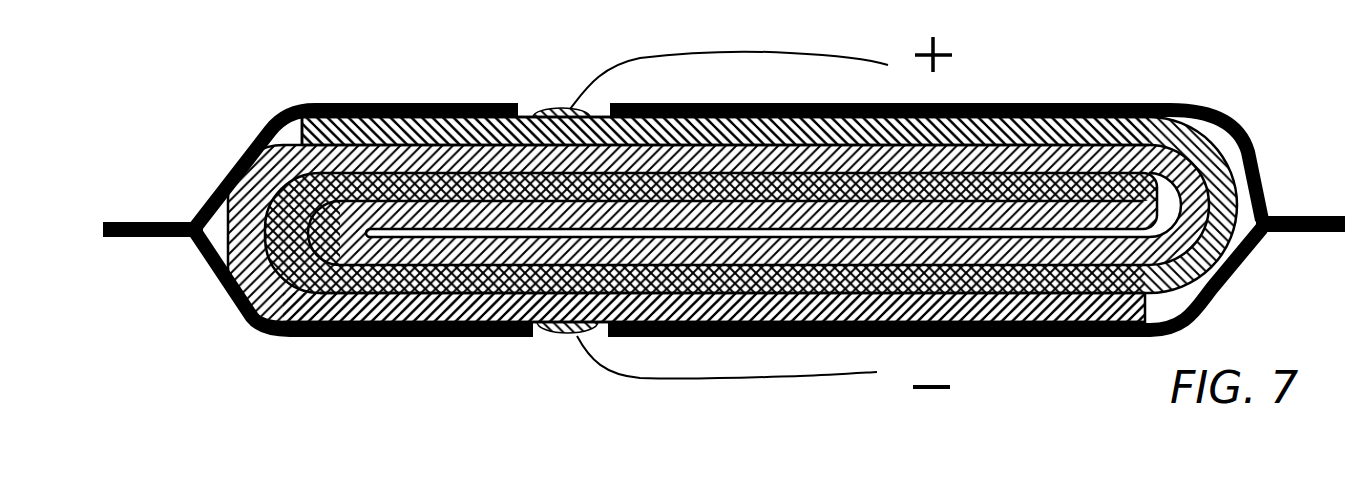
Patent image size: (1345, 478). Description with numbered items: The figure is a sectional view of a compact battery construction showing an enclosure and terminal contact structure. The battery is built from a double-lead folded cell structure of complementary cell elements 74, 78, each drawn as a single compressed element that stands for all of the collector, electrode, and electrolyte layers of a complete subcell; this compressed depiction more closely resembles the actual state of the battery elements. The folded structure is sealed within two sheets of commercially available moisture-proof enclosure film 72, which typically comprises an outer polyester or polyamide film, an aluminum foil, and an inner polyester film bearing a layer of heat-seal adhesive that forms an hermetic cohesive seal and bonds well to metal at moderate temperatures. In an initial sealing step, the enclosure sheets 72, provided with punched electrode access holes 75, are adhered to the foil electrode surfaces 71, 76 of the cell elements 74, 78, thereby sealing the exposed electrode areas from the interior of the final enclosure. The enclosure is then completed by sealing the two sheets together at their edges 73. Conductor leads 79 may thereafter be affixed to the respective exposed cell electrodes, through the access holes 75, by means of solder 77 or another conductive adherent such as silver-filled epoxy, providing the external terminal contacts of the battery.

The foil electrode surface 71 is at (507, 337).
The moisture-proof enclosure film 72 is at (287, 105).
The sealed edges 73 is at (133, 238).
The cell element 74 is at (430, 338).
The punched electrode access hole 75 is at (552, 333).
The foil electrode surface 76 is at (478, 103).
The solder 77 is at (542, 108).
The cell element 78 is at (372, 104).
The conductor lead 79 is at (712, 379).